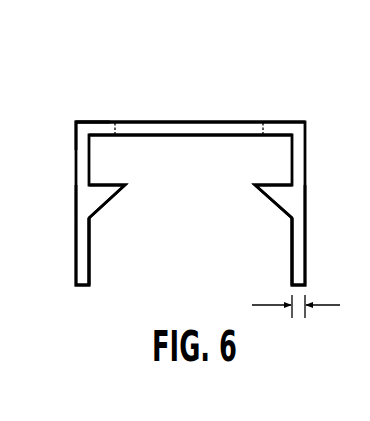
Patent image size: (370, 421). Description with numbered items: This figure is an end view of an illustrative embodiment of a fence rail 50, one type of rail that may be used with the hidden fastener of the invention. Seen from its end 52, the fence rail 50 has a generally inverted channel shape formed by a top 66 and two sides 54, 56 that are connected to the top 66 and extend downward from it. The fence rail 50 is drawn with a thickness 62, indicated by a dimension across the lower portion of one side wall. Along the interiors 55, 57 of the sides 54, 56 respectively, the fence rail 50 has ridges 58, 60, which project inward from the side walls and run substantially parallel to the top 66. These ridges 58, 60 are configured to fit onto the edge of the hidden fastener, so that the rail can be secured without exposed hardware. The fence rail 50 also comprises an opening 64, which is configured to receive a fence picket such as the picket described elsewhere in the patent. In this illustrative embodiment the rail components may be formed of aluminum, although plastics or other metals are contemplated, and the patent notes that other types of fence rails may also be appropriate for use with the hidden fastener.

The fence rail 50 is at (150, 75).
The end 52 is at (162, 133).
The side 54 is at (80, 270).
The interior 55 is at (94, 248).
The side 56 is at (298, 272).
The interior 57 is at (286, 248).
The ridge 58 is at (98, 192).
The ridge 60 is at (273, 192).
The thickness 62 is at (298, 312).
The opening 64 is at (202, 121).
The top 66 is at (92, 121).